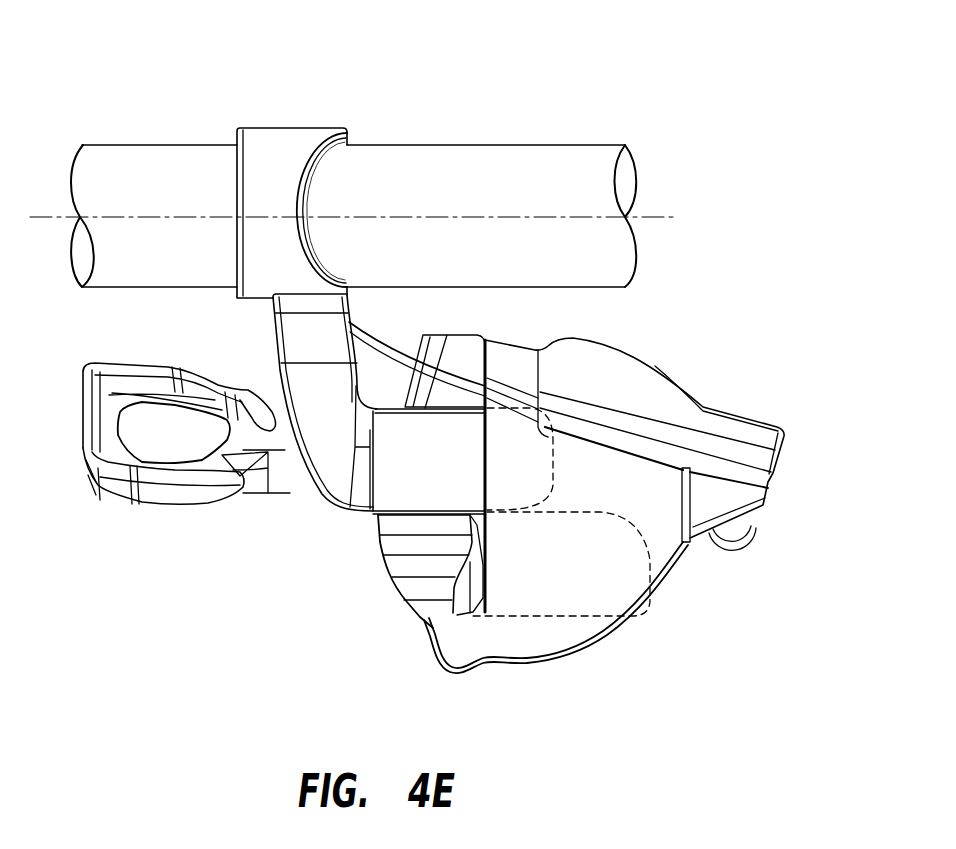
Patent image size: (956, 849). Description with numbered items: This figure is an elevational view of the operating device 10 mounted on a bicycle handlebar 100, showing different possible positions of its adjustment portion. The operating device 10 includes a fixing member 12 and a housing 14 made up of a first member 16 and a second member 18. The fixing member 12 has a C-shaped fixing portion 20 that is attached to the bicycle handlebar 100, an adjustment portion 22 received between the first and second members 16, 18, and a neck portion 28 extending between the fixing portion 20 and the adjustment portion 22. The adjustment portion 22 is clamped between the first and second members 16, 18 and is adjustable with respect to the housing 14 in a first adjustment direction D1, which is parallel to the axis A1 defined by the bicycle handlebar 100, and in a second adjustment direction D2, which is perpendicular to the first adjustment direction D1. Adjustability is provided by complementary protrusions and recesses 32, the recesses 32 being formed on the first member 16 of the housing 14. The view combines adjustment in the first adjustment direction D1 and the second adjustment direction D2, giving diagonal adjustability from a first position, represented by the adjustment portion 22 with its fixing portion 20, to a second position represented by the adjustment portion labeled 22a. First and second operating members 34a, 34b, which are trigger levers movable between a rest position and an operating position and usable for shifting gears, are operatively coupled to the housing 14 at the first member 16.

The operating device 10 is at (712, 115).
The fixing member 12 is at (306, 118).
The housing 14 is at (762, 392).
The first member 16 is at (643, 390).
The second member 18 is at (550, 647).
The fixing portion 20 is at (257, 127).
The adjustment portion 22 is at (392, 497).
The adjustment portion in second position 22a is at (651, 598).
The neck portion 28 is at (288, 356).
The recesses 32 is at (413, 585).
The first operating member 34a is at (105, 488).
The second operating member 34b is at (372, 355).
The bicycle handlebar 100 is at (452, 152).
The axis A1 is at (665, 216).
The first adjustment direction D1 is at (492, 703).
The second adjustment direction D2 is at (817, 420).